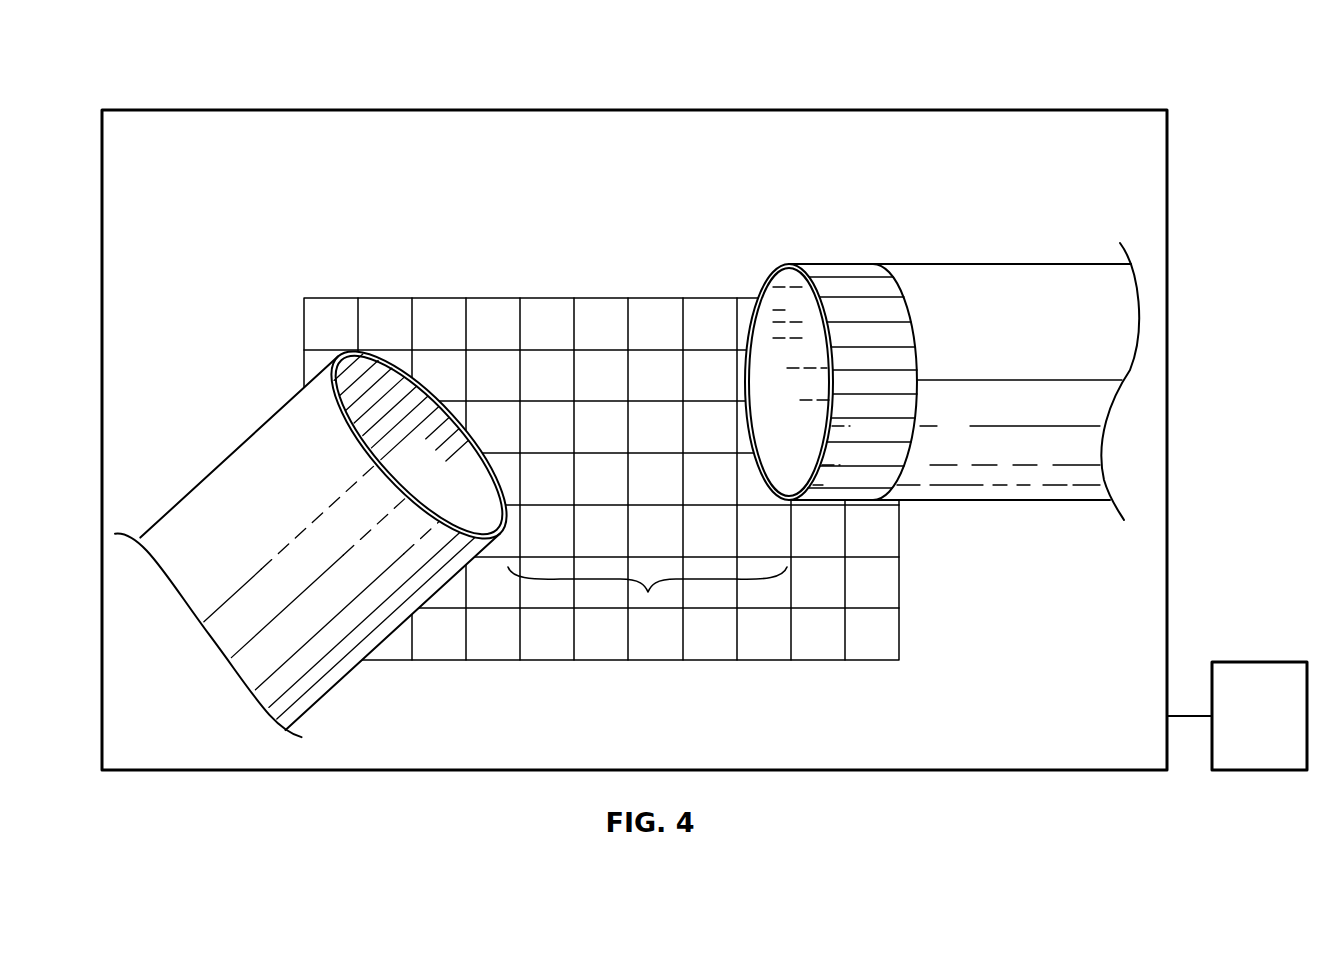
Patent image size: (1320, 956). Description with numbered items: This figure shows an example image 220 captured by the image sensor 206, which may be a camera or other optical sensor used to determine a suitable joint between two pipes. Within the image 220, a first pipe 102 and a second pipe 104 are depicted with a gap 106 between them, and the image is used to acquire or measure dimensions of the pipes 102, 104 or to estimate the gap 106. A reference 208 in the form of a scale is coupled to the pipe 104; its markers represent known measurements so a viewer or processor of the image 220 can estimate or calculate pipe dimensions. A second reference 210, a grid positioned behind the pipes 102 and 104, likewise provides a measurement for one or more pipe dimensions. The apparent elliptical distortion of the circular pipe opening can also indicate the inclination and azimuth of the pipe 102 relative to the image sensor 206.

The image 220 is at (182, 86).
The pipe 102 is at (222, 439).
The pipe 104 is at (995, 248).
The reference 208 is at (848, 264).
The gap 106 is at (647, 594).
The second reference 210 is at (890, 637).
The image sensor 206 is at (1262, 662).